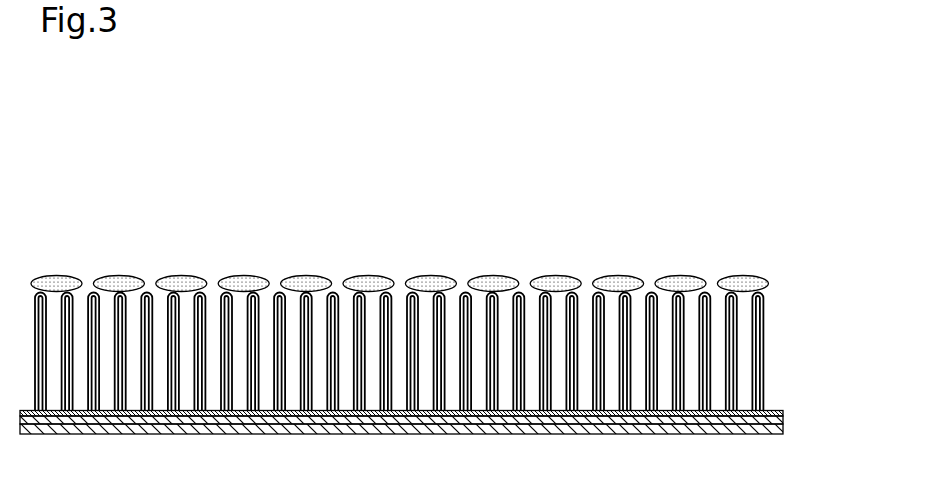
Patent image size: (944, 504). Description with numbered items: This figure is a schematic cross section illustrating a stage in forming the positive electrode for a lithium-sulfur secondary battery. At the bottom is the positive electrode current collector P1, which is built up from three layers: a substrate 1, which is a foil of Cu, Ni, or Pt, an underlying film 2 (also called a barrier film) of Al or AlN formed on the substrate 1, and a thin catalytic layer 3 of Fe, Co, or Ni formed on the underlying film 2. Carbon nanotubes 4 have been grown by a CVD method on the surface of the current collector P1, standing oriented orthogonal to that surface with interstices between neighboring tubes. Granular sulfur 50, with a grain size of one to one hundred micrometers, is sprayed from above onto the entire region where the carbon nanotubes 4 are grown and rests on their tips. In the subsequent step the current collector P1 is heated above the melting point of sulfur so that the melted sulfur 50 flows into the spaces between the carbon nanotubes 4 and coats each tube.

The substrate 1 is at (424, 439).
The underlying film 2 is at (783, 418).
The catalytic layer 3 is at (783, 412).
The carbon nanotubes 4 is at (766, 336).
The granular sulfur 50 is at (108, 280).
The positive electrode current collector P1 is at (446, 421).